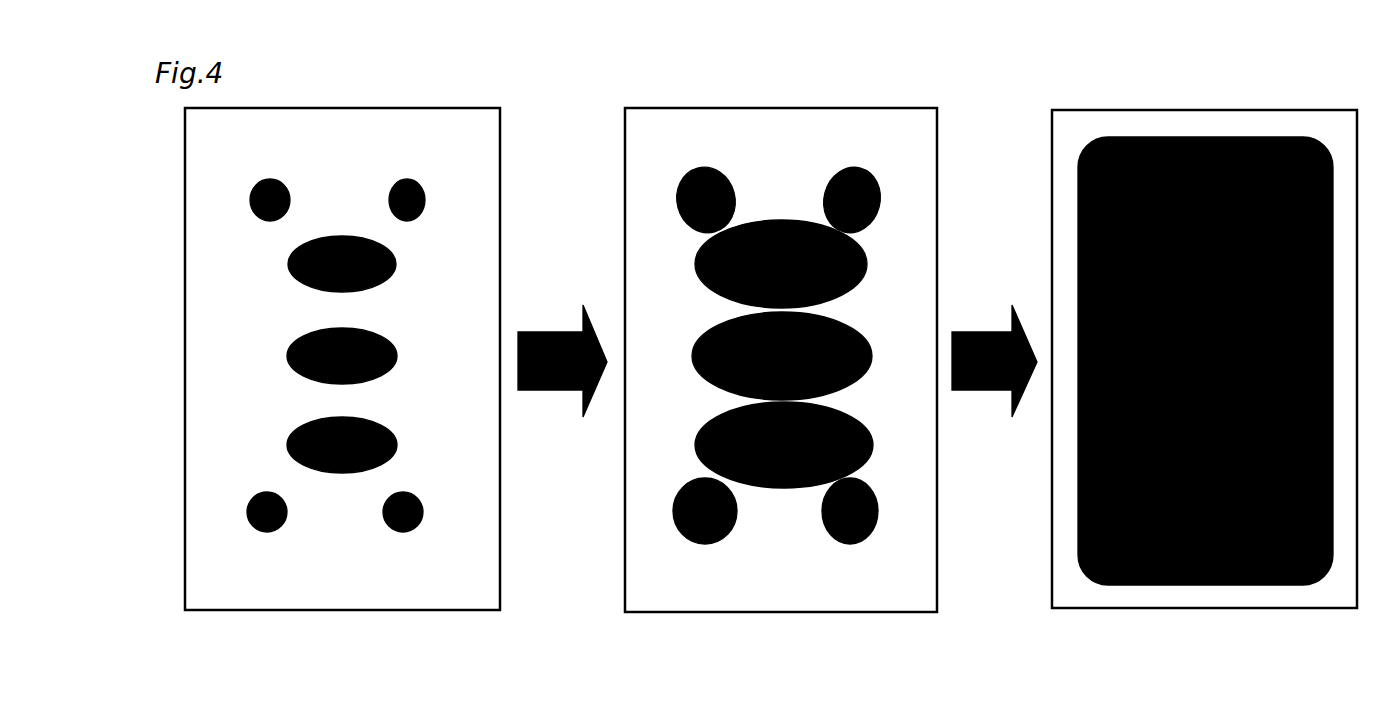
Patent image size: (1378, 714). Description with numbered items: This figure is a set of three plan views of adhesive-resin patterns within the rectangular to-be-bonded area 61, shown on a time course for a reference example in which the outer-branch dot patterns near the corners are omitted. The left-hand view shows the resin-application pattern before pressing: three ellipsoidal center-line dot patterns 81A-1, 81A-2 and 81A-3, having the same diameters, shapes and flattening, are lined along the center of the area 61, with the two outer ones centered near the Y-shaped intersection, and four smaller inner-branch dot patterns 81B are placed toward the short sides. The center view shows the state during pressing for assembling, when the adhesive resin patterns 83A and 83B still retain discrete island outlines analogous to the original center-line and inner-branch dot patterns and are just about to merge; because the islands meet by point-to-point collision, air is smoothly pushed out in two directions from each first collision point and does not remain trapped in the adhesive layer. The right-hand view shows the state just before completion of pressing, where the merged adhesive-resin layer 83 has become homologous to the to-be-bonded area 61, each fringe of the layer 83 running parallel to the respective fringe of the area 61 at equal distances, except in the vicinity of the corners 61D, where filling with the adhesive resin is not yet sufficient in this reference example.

The to-be-bonded area 61 is at (185, 305).
The center-line dot pattern 81A-1 is at (374, 286).
The center-line dot pattern 81A-2 is at (396, 370).
The center-line dot pattern 81A-3 is at (396, 447).
The inner-branch dot patterns 81B is at (392, 525).
The adhesive resin pattern 83A is at (905, 420).
The adhesive resin pattern 83B is at (878, 517).
The adhesive-resin layer 83 is at (1078, 265).
The corners 61D is at (1053, 605).